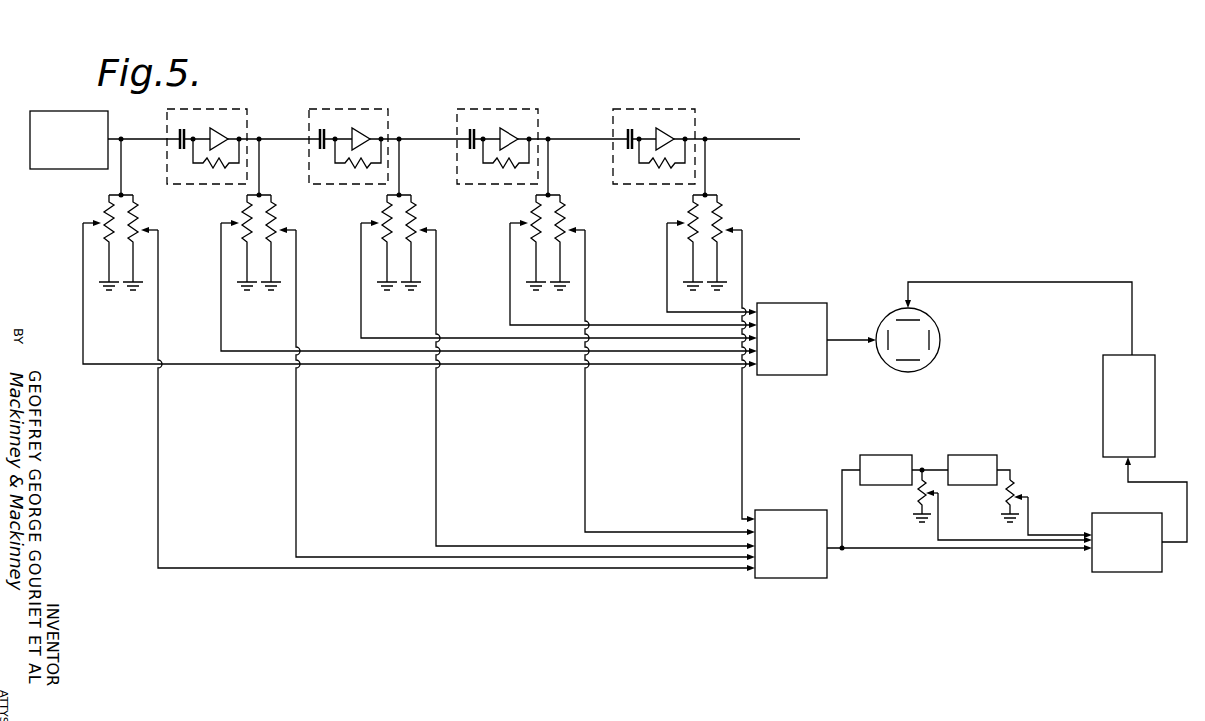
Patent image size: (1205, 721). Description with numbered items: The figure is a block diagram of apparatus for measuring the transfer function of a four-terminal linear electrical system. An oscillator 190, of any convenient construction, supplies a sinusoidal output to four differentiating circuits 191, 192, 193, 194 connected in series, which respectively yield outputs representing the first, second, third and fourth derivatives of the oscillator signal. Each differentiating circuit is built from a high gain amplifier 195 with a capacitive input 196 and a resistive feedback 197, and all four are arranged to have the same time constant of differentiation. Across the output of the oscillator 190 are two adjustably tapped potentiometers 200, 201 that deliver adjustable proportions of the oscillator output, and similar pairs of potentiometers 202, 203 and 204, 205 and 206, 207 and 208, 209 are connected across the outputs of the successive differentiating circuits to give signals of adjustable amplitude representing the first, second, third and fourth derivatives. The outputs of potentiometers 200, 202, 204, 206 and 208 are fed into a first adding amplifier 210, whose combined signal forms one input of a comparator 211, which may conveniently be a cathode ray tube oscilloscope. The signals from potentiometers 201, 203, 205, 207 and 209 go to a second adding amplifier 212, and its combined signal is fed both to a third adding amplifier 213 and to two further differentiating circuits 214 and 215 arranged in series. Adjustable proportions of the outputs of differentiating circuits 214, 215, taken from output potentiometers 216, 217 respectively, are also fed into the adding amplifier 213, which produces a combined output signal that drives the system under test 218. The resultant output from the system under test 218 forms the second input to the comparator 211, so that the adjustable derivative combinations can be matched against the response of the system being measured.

The oscillator 190 is at (66, 120).
The differentiating circuit 191 is at (220, 108).
The differentiating circuit 192 is at (350, 108).
The differentiating circuit 193 is at (505, 108).
The differentiating circuit 194 is at (658, 108).
The high gain amplifier 195 is at (226, 134).
The capacitive input 196 is at (186, 130).
The resistive feedback 197 is at (232, 161).
The adjustably tapped potentiometer 200 is at (104, 214).
The adjustably tapped potentiometer 201 is at (138, 220).
The potentiometer 202 is at (244, 226).
The potentiometer 203 is at (274, 218).
The potentiometer 204 is at (385, 227).
The potentiometer 205 is at (415, 219).
The potentiometer 206 is at (531, 227).
The potentiometer 207 is at (565, 219).
The potentiometer 208 is at (690, 215).
The potentiometer 209 is at (722, 219).
The first adding amplifier 210 is at (797, 303).
The comparator 211 is at (926, 322).
The second adding amplifier 212 is at (787, 512).
The third adding amplifier 213 is at (1114, 513).
The differentiating circuit 214 is at (885, 455).
The differentiating circuit 215 is at (970, 455).
The output potentiometer 216 is at (916, 492).
The output potentiometer 217 is at (1012, 486).
The system under test 218 is at (1103, 393).